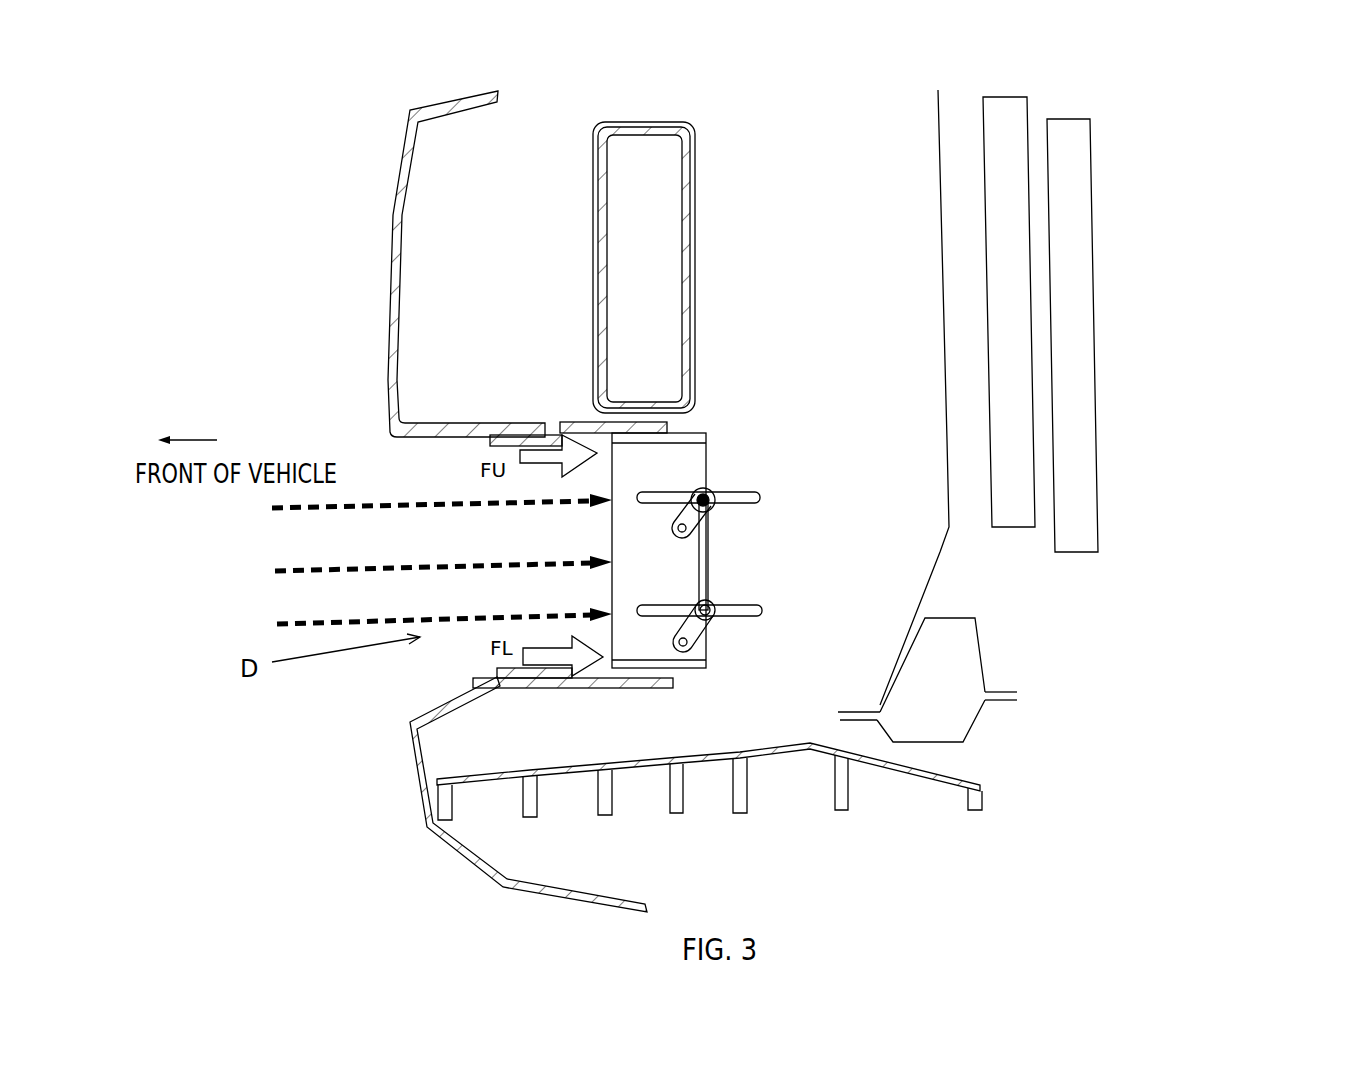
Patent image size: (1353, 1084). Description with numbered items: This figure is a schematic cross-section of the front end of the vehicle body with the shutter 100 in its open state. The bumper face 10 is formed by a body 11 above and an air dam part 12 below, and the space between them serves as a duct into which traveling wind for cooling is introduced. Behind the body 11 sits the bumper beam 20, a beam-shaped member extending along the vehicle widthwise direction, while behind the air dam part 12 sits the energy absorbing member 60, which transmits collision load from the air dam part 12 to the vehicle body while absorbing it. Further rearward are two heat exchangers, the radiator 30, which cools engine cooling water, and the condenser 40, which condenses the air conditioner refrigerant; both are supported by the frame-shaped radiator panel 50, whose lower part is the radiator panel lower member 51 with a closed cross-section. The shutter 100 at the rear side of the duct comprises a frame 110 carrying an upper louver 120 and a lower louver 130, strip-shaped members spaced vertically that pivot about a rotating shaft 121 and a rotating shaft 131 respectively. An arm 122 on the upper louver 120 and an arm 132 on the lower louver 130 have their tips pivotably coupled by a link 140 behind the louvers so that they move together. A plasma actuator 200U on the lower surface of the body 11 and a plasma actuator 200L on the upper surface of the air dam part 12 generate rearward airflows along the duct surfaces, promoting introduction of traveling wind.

The bumper face 10 is at (266, 157).
The body 11 is at (327, 162).
The air dam part 12 is at (373, 805).
The bumper beam 20 is at (692, 138).
The radiator 30 is at (1090, 265).
The condenser 40 is at (1027, 217).
The radiator panel 50 is at (940, 170).
The radiator panel lower member 51 is at (973, 715).
The energy absorbing member 60 is at (982, 787).
The shutter 100 is at (787, 354).
The frame 110 is at (697, 433).
The upper louver 120 is at (709, 504).
The rotating shaft 121 is at (757, 497).
The arm 122 is at (713, 523).
The lower louver 130 is at (753, 610).
The rotating shaft 131 is at (762, 606).
The arm 132 is at (723, 630).
The link 140 is at (703, 573).
The plasma actuator 200U is at (527, 438).
The plasma actuator 200L is at (533, 673).